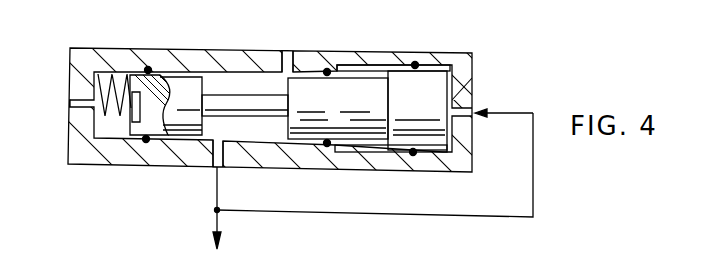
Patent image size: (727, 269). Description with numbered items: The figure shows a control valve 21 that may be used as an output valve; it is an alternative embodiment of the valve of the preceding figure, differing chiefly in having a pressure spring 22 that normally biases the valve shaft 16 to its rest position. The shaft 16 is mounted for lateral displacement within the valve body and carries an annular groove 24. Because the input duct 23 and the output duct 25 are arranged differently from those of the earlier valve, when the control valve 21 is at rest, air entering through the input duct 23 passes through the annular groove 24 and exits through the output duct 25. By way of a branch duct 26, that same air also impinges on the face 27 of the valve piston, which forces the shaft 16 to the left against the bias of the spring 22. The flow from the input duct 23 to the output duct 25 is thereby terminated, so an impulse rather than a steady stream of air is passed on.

The shaft 16 is at (181, 137).
The control valve 21 is at (471, 42).
The pressure spring 22 is at (115, 93).
The input duct 23 is at (283, 44).
The annular groove 24 is at (232, 80).
The output duct 25 is at (215, 215).
The branch duct 26 is at (398, 216).
The face 27 is at (448, 88).